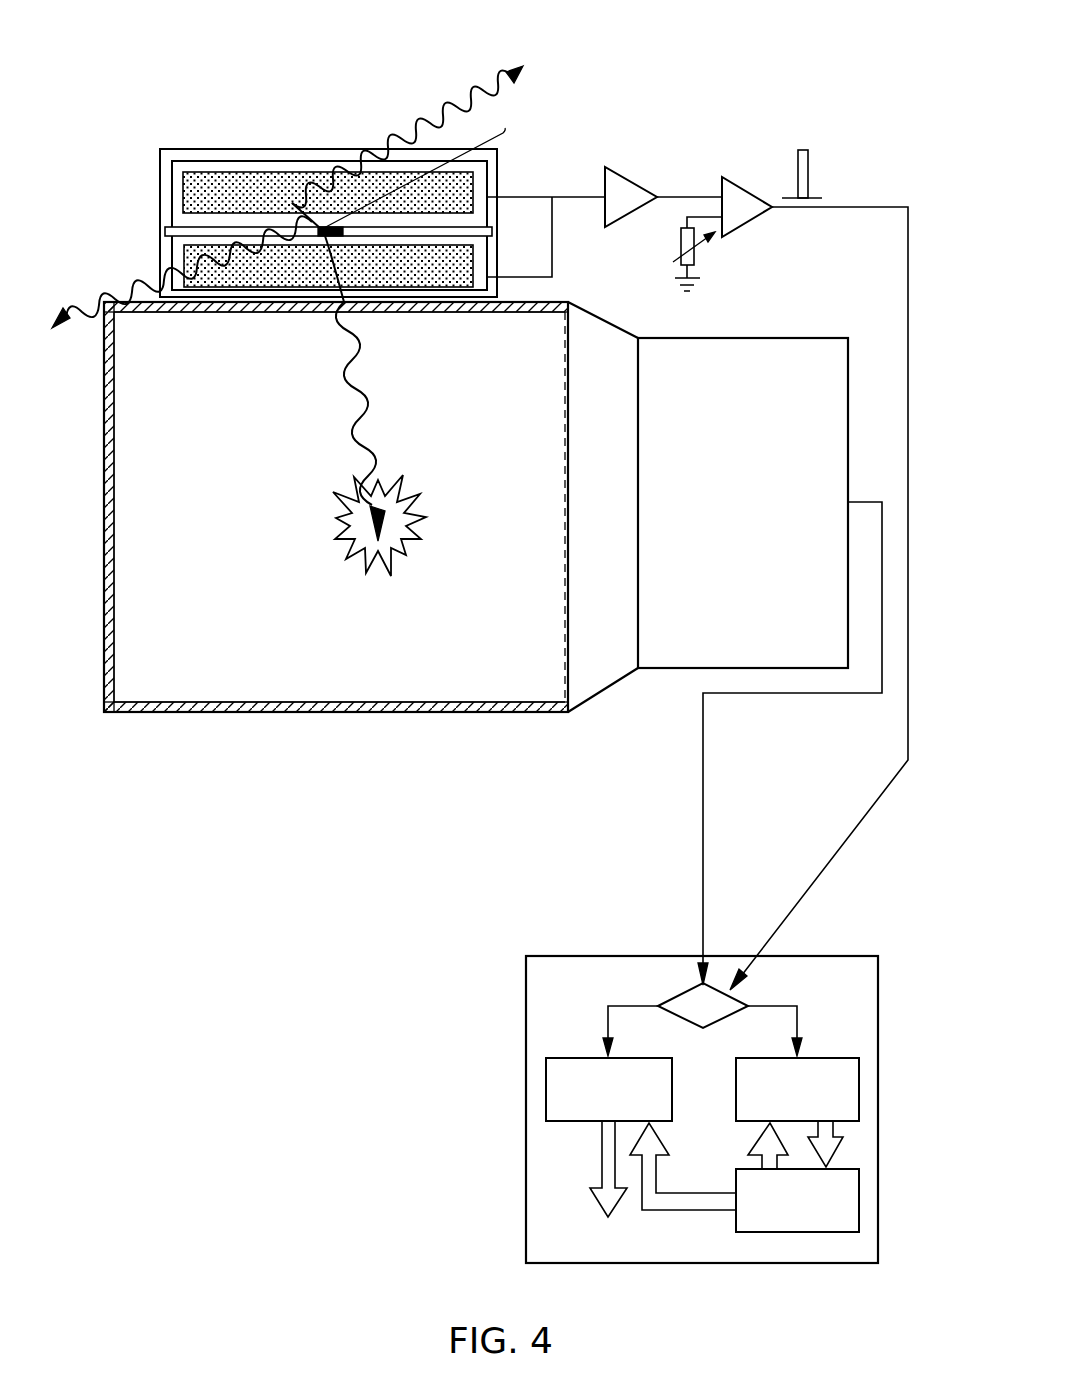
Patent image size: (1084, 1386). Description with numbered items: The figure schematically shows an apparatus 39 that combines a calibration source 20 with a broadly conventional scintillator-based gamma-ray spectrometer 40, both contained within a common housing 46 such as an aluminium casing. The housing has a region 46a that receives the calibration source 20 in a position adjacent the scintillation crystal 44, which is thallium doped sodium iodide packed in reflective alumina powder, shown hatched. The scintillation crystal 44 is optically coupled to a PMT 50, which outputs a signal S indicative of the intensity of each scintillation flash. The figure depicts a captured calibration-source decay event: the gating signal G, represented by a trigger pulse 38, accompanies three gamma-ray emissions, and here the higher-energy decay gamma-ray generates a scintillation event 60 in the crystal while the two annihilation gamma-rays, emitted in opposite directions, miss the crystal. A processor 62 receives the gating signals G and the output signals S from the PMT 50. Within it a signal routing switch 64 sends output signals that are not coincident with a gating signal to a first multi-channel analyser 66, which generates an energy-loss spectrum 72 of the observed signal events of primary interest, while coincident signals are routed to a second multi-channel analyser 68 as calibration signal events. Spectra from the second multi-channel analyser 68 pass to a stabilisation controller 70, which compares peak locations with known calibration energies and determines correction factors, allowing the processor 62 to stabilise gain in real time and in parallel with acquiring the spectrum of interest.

The calibration source 20 is at (217, 168).
The trigger pulse 38 is at (808, 150).
The apparatus 39 is at (760, 94).
The gamma-ray spectrometer 40 is at (164, 745).
The scintillation crystal 44 is at (175, 364).
The housing 46 is at (326, 716).
The region for receiving the calibration source 46a is at (165, 200).
The PMT 50 is at (763, 335).
The scintillation event 60 is at (428, 528).
The processor 62 is at (526, 995).
The signal routing switch 64 is at (742, 1000).
The first multi-channel analyser 66 is at (546, 1088).
The second multi-channel analyser 68 is at (859, 1087).
The stabilisation controller 70 is at (859, 1200).
The energy-loss spectrum 72 is at (608, 1189).